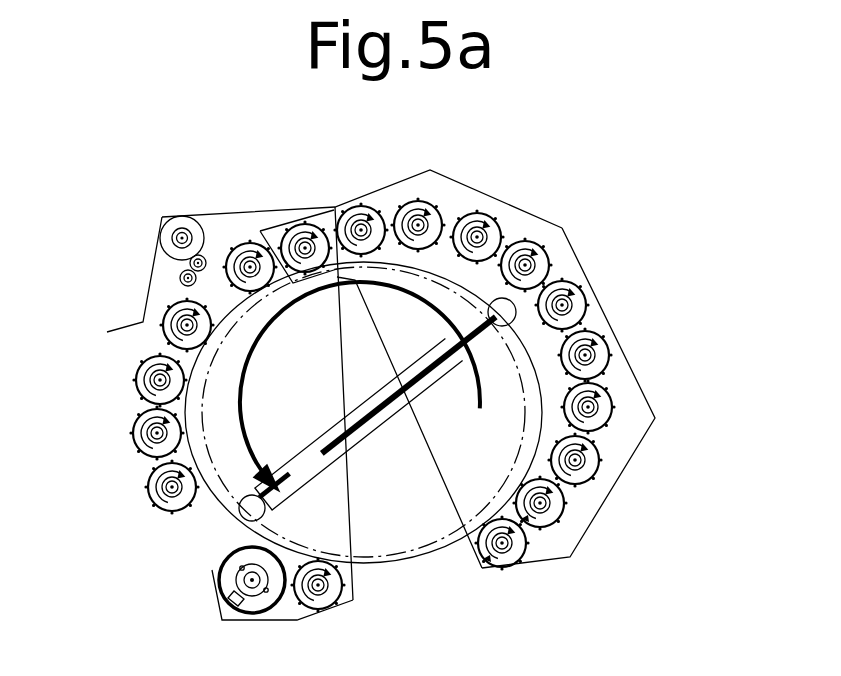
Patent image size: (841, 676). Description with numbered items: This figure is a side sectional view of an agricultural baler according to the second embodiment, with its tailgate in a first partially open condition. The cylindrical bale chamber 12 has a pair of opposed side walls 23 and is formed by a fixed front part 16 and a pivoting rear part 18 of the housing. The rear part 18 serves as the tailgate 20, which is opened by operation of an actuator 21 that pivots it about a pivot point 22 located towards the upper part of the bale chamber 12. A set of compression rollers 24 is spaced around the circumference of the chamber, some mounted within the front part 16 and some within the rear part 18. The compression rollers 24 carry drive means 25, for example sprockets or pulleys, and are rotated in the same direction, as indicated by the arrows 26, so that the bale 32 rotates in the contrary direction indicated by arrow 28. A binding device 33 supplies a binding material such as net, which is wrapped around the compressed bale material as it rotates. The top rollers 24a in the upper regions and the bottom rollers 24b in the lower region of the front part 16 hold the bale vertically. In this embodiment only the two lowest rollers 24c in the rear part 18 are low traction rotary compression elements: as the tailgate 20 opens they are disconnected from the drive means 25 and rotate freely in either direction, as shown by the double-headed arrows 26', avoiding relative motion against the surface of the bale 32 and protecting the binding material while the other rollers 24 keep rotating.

The bale chamber 12 is at (384, 501).
The front part of the bale chamber 16 is at (145, 283).
The rear part of the bale chamber 18 is at (492, 196).
The tailgate 20 is at (648, 375).
The actuator 21 is at (477, 340).
The pivot point 22 is at (305, 248).
The side walls 23 is at (352, 538).
The compression rollers 24 is at (578, 283).
The top rollers 24a is at (288, 233).
The bottom rollers of the front part 24b is at (303, 603).
The low traction rotary compression elements 24c is at (530, 545).
The drive means 25 is at (583, 461).
The arrows 26 is at (110, 486).
The double-headed arrows 26' is at (487, 480).
The arrow 28 is at (290, 323).
The bale 32 is at (420, 557).
The binding device 33 is at (152, 237).